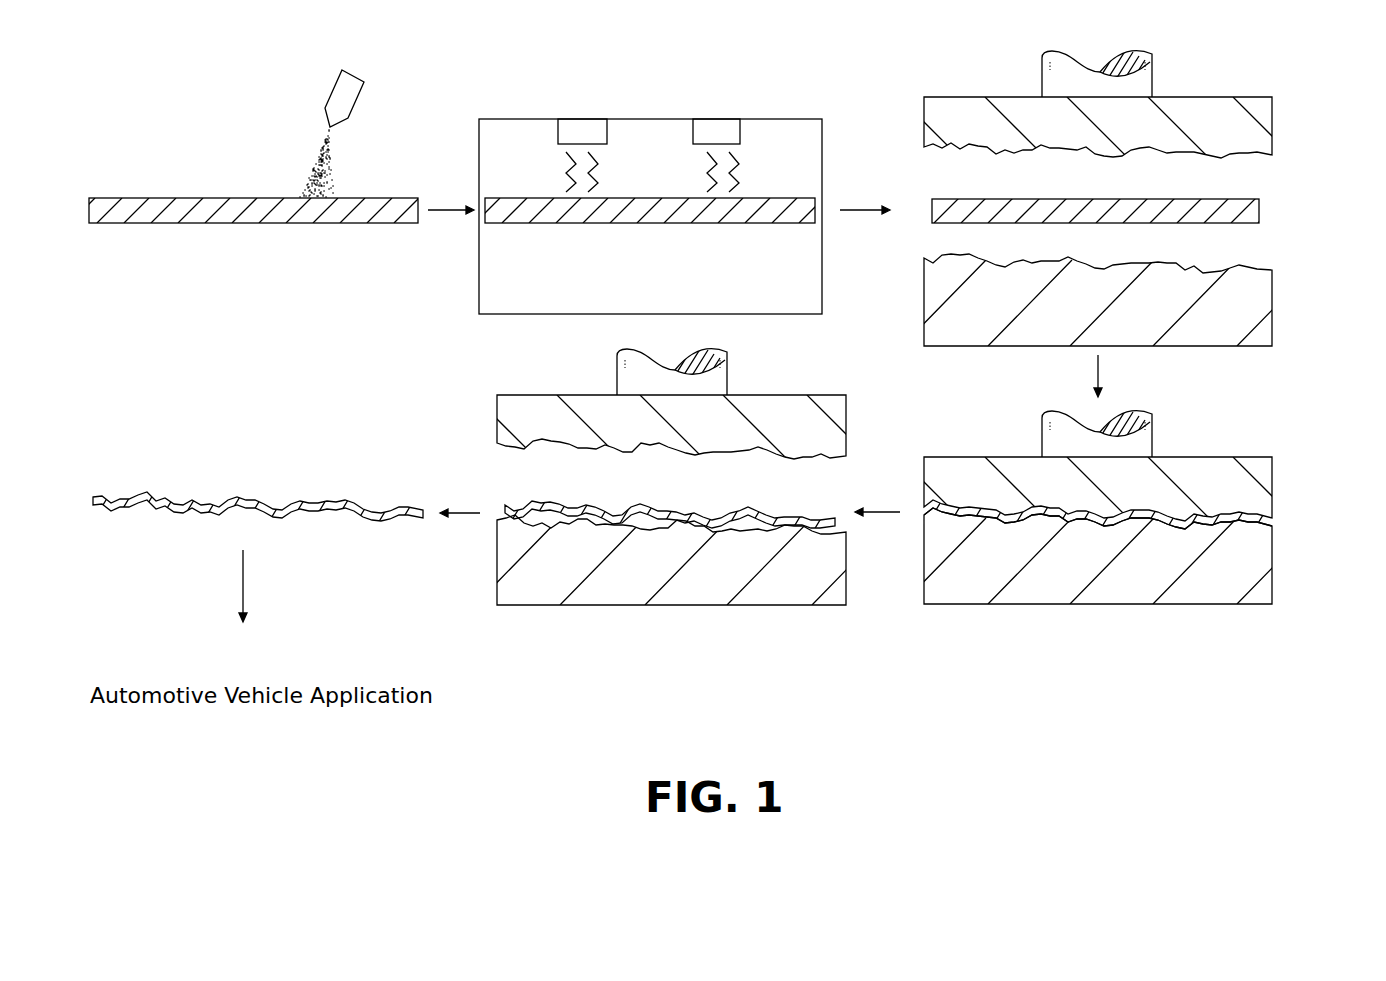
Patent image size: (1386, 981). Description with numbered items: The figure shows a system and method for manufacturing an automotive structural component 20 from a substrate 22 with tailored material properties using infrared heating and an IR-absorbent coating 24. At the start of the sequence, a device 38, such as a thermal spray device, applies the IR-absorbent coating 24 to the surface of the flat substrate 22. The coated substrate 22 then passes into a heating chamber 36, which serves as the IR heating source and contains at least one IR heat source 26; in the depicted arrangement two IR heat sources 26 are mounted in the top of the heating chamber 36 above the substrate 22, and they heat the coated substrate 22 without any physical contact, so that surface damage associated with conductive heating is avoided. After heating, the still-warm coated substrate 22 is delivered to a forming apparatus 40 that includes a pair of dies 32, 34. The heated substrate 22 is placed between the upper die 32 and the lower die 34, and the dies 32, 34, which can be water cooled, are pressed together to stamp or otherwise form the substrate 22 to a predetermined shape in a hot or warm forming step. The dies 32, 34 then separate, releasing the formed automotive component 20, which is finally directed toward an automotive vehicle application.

The automotive component 20 is at (533, 508).
The substrate 22 is at (166, 197).
The IR-absorbent coating 24 is at (300, 195).
The IR heat source 26 is at (693, 137).
The die 32 is at (942, 108).
The die 34 is at (1272, 305).
The heating chamber 36 is at (538, 116).
The device 38 is at (364, 82).
The forming apparatus 40 is at (905, 146).